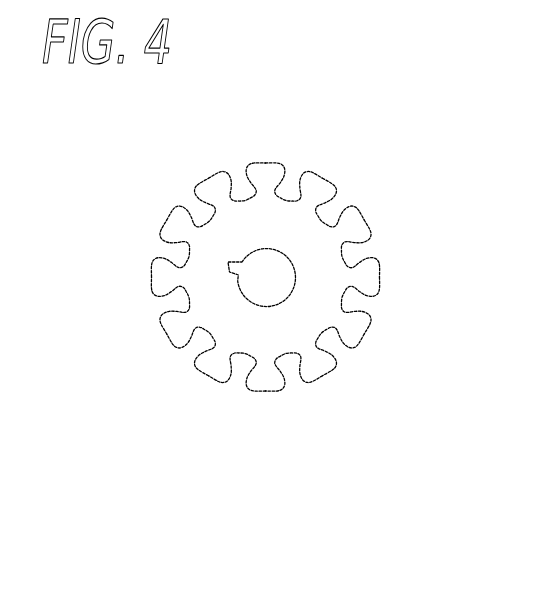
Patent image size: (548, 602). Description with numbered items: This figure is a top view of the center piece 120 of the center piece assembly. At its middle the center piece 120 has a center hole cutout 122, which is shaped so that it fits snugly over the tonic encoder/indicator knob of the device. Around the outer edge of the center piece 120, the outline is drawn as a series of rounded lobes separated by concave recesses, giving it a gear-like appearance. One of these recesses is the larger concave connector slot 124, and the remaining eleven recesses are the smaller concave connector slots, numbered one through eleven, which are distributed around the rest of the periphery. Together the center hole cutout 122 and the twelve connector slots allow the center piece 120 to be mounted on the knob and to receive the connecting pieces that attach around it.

The center piece 120 is at (218, 360).
The center hole cutout 122 is at (265, 282).
The larger concave connector slot 124 is at (163, 243).